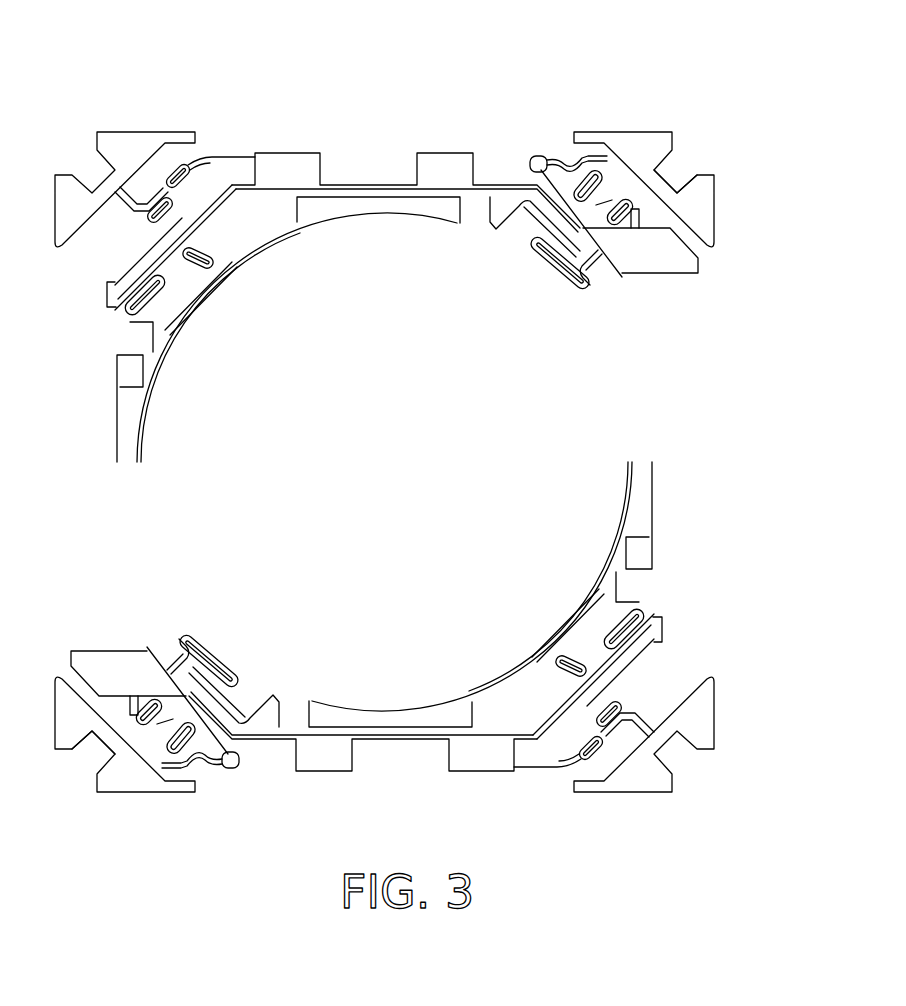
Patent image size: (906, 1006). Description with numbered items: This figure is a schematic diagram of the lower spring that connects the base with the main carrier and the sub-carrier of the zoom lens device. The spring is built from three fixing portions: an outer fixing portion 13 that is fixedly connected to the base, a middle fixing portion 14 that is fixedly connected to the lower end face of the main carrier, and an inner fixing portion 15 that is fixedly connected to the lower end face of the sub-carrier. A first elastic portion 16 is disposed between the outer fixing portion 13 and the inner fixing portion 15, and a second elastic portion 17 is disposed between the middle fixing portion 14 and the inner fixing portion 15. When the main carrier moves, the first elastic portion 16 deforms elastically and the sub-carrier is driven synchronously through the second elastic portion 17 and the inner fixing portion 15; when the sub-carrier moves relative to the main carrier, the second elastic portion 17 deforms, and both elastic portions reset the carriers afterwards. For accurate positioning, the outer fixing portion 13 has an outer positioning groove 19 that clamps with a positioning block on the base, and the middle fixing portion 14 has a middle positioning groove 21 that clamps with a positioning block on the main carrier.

The outer fixing portion 13 is at (633, 143).
The middle fixing portion 14 is at (637, 255).
The inner fixing portion 15 is at (358, 200).
The first elastic portion 16 is at (532, 160).
The second elastic portion 17 is at (560, 275).
The outer positioning groove 19 is at (668, 173).
The middle positioning groove 21 is at (382, 180).